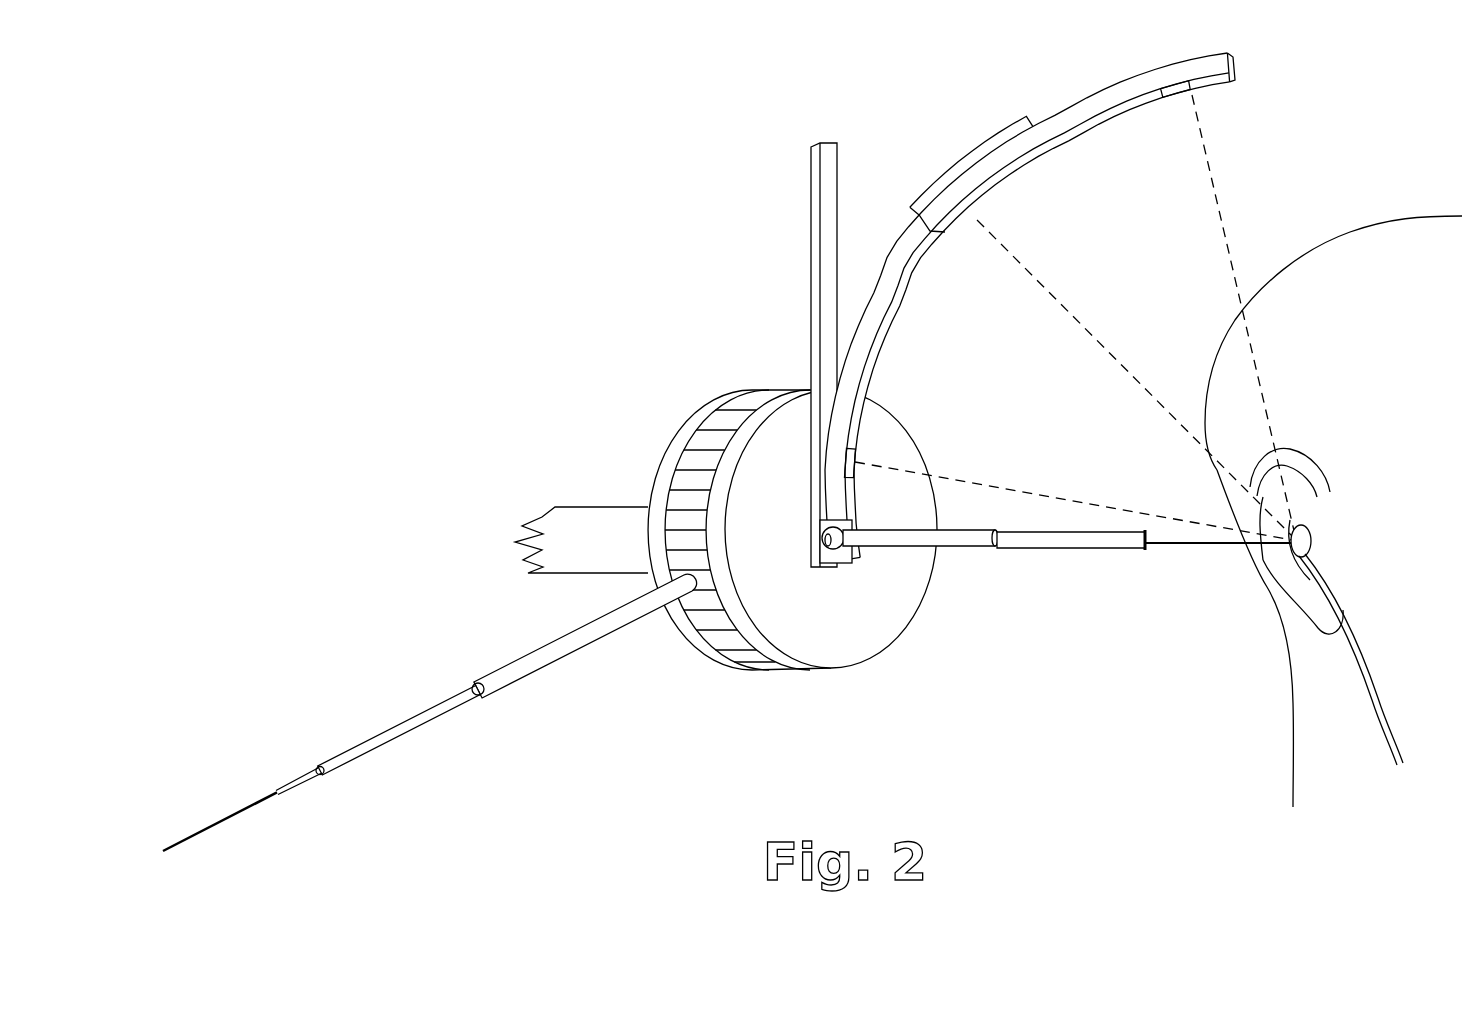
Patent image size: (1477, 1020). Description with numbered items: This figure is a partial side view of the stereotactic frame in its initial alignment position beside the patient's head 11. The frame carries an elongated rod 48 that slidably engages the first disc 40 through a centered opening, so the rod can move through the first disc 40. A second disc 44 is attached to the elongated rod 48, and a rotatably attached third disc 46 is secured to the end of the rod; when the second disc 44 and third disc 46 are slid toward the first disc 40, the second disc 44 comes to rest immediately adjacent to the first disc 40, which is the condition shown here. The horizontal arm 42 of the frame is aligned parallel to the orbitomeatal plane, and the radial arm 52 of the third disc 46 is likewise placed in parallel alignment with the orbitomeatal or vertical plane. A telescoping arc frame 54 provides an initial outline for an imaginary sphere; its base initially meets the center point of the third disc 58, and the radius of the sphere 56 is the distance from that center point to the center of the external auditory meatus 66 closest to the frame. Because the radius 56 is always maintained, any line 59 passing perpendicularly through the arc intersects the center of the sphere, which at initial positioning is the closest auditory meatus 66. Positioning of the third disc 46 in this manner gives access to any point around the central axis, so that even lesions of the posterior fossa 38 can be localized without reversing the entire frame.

The patient's head 11 is at (1413, 222).
The posterior fossa 38 is at (1270, 605).
The first disc 40 is at (673, 422).
The horizontal arm 42 is at (505, 702).
The second disc 44 is at (750, 664).
The third disc 46 is at (750, 632).
The elongated rod 48 is at (580, 500).
The radial arm 52 is at (812, 258).
The arc frame 54 is at (1133, 77).
The radius of the sphere 56 is at (1043, 554).
The center point of the third disc 58 is at (828, 548).
The line passing perpendicularly through the arc 59 is at (1207, 135).
The external auditory meatus 66 is at (1305, 527).